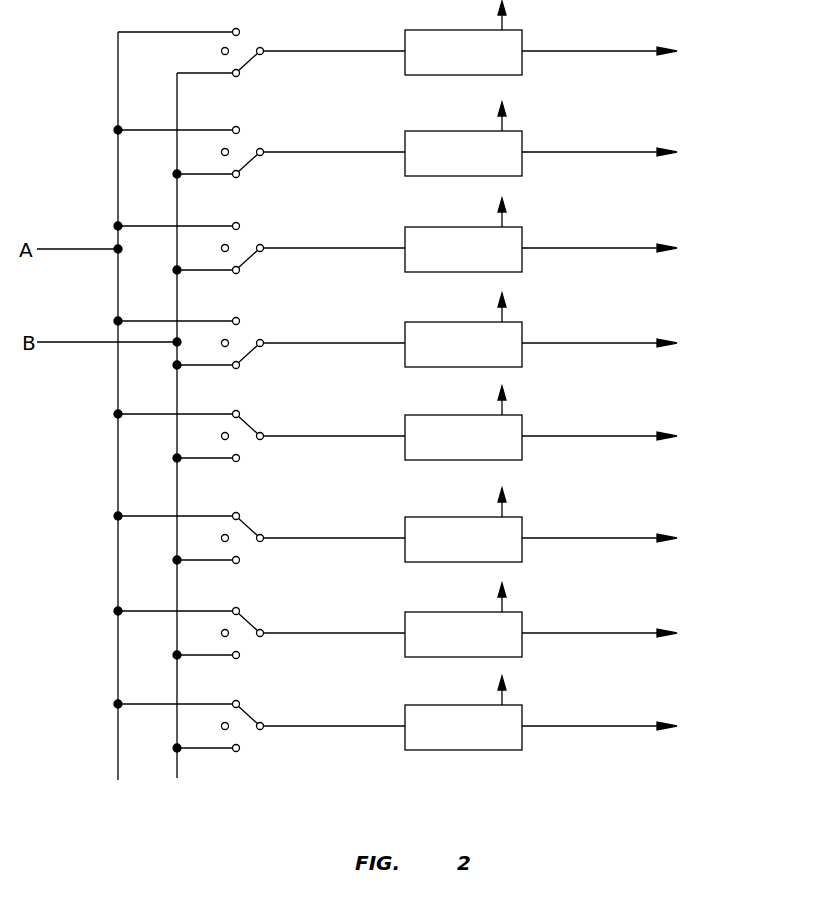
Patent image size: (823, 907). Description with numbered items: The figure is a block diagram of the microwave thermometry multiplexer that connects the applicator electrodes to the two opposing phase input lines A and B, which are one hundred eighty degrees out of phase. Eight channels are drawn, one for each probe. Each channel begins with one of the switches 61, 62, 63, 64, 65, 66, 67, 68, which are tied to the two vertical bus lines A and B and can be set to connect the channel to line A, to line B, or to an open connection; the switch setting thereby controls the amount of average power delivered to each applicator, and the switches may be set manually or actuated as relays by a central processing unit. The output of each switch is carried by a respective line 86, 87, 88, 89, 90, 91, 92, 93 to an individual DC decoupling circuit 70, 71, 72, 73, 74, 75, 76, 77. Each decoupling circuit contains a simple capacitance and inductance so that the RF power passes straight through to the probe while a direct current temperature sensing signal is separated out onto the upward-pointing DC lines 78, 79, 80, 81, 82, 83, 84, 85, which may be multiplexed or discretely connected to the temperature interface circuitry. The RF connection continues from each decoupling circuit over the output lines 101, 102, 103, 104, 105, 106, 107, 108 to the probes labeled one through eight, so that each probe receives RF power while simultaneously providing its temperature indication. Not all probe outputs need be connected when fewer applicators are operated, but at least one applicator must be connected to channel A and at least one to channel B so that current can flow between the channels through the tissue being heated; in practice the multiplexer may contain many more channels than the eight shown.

The switch 61 is at (242, 45).
The switch 62 is at (242, 146).
The switch 63 is at (242, 242).
The switch 64 is at (242, 337).
The switch 65 is at (248, 426).
The switch 66 is at (248, 528).
The switch 67 is at (248, 623).
The switch 68 is at (248, 716).
The DC decoupling circuit 70 is at (458, 30).
The DC decoupling circuit 71 is at (436, 131).
The DC decoupling circuit 72 is at (436, 227).
The DC decoupling circuit 73 is at (431, 322).
The DC decoupling circuit 74 is at (441, 415).
The DC decoupling circuit 75 is at (447, 517).
The DC decoupling circuit 76 is at (438, 612).
The DC decoupling circuit 77 is at (428, 705).
The DC line 78 is at (504, 27).
The DC line 79 is at (504, 128).
The DC line 80 is at (504, 224).
The DC line 81 is at (504, 319).
The DC line 82 is at (504, 412).
The DC line 83 is at (504, 514).
The DC line 84 is at (504, 609).
The DC line 85 is at (504, 702).
The line 86 is at (298, 51).
The line 87 is at (305, 152).
The line 88 is at (312, 248).
The line 89 is at (310, 343).
The line 90 is at (303, 436).
The line 91 is at (312, 538).
The line 92 is at (300, 633).
The line 93 is at (288, 726).
The line 101 is at (572, 51).
The line 102 is at (564, 152).
The line 103 is at (565, 248).
The line 104 is at (568, 343).
The line 105 is at (566, 436).
The line 106 is at (566, 538).
The line 107 is at (564, 633).
The line 108 is at (552, 726).